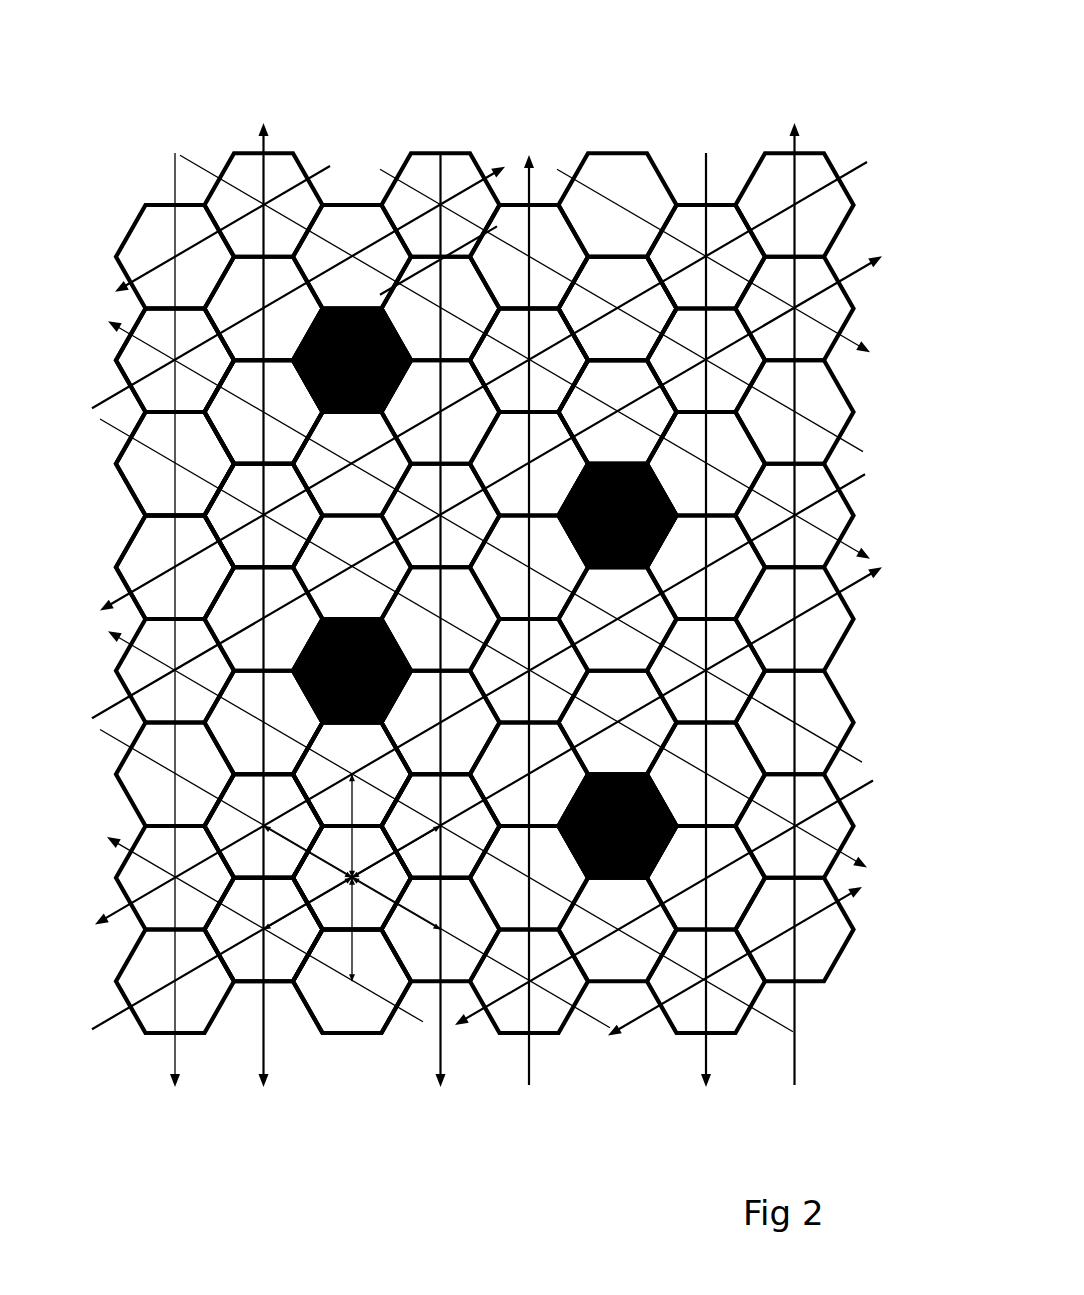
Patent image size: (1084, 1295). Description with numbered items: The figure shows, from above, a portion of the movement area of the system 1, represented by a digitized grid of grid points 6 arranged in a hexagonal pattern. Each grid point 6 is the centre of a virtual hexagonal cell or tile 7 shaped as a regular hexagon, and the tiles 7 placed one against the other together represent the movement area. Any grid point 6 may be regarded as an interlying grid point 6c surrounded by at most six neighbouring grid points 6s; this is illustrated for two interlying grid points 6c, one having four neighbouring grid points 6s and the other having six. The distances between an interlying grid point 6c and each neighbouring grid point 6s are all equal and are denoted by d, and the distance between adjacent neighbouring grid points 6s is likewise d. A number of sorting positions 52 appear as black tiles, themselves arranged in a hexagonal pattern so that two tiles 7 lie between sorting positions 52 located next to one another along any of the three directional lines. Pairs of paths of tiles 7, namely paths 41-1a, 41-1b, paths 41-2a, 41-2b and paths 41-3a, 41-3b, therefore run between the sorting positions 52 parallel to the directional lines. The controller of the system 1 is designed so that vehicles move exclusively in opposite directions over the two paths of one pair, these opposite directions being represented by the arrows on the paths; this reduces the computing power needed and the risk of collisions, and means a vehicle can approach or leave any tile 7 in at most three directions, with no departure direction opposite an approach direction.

The system 1 is at (122, 142).
The sorting position 52 is at (371, 353).
The grid point 6 is at (538, 352).
The interlying grid point 6c is at (172, 463).
The neighbouring grid point 6s is at (172, 363).
The hexagonal tile 7 is at (512, 333).
The distance d is at (410, 913).
The first path of first pair 41-1a is at (820, 734).
The second path of first pair 41-1b is at (827, 834).
The first path of second pair 41-2a is at (813, 192).
The second path of second pair 41-2b is at (825, 288).
The first path of third pair 41-3a is at (442, 187).
The second path of third pair 41-3b is at (533, 437).